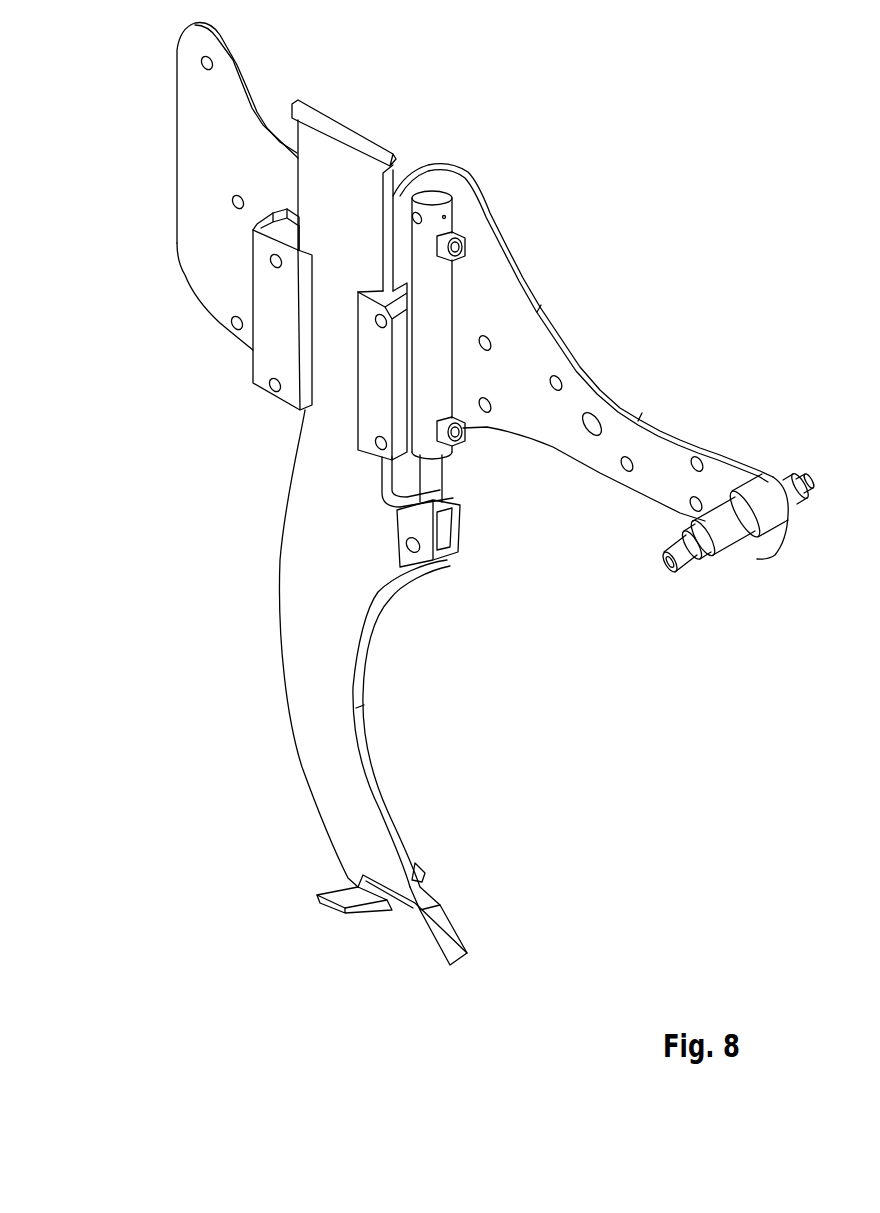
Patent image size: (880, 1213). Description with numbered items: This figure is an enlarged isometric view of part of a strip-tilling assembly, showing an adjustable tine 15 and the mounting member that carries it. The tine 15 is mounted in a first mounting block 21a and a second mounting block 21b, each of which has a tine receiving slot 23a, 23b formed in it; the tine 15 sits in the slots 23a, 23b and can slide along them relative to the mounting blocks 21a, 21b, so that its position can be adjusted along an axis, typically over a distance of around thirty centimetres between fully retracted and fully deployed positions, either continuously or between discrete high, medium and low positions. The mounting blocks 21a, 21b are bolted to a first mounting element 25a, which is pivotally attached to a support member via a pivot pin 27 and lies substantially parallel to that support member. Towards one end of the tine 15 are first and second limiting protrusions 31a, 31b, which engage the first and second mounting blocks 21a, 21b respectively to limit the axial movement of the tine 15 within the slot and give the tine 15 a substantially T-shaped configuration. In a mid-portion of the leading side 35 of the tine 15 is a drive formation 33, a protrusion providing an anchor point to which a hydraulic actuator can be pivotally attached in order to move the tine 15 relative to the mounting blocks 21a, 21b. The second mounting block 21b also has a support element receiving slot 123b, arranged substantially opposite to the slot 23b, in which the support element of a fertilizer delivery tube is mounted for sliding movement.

The tine 15 is at (310, 732).
The first mounting block 21a is at (368, 418).
The second mounting block 21b is at (263, 380).
The tine receiving slot 23a is at (379, 290).
The tine receiving slot 23b is at (302, 247).
The support element receiving slot 123b is at (269, 220).
The first mounting element 25a is at (507, 243).
The pivot pin 27 is at (668, 572).
The first limiting protrusion 31a is at (400, 155).
The second limiting protrusion 31b is at (295, 101).
The drive formation 33 is at (445, 556).
The leading side 35 is at (368, 618).